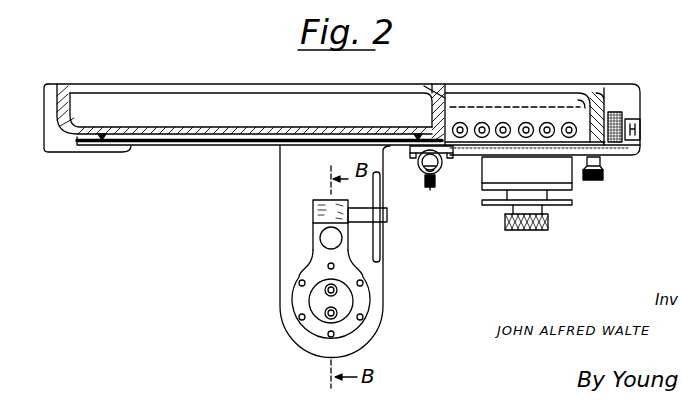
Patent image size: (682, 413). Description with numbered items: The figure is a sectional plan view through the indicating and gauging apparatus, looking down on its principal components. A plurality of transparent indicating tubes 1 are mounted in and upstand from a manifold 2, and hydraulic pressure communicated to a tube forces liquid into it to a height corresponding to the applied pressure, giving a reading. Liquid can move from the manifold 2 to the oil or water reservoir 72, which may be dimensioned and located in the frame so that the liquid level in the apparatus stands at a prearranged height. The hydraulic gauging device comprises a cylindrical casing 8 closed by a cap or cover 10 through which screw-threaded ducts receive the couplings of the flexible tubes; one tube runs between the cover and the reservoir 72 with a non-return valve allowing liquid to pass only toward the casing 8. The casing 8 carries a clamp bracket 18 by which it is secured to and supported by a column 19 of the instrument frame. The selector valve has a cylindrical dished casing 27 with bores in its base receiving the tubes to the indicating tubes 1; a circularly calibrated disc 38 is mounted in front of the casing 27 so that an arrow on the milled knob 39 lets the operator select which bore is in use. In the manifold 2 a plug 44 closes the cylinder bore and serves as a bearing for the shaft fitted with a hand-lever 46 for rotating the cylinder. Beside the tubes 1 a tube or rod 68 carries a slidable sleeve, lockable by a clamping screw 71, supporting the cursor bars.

The indicating tubes 1 is at (503, 123).
The manifold 2 is at (527, 117).
The cylindrical casing 8 is at (292, 297).
The cap or cover 10 is at (349, 303).
The clamp bracket 18 is at (314, 213).
The column 19 is at (331, 238).
The cylindrical dished casing 27 is at (500, 172).
The disc 38 is at (568, 205).
The milled knob 39 is at (508, 226).
The screwed-in plug 44 is at (632, 148).
The hand-lever 46 is at (638, 130).
The tube or rod 68 is at (421, 167).
The clamping screw 71 is at (436, 190).
The reservoir 72 is at (168, 105).